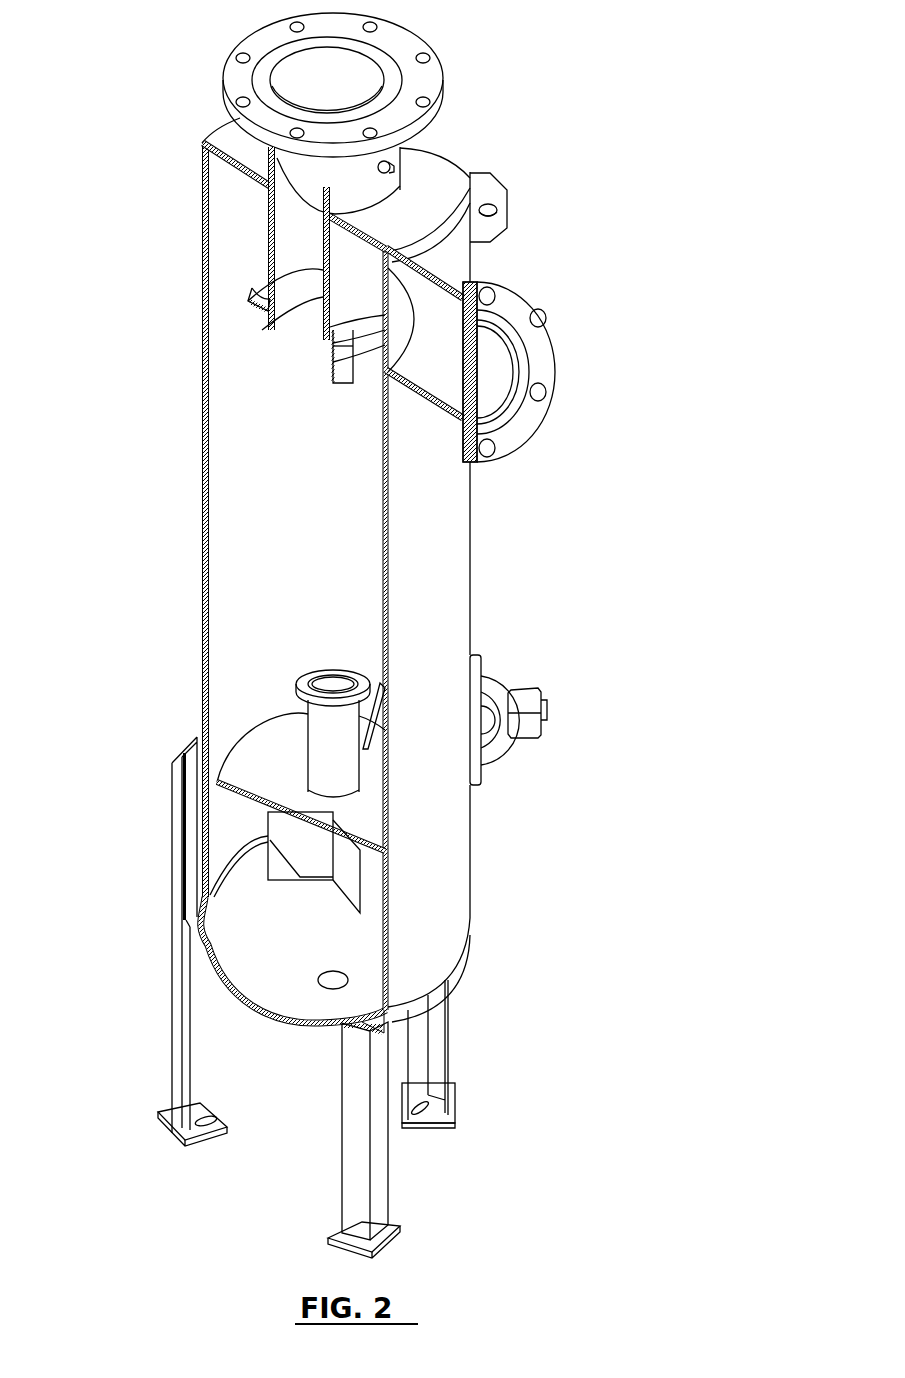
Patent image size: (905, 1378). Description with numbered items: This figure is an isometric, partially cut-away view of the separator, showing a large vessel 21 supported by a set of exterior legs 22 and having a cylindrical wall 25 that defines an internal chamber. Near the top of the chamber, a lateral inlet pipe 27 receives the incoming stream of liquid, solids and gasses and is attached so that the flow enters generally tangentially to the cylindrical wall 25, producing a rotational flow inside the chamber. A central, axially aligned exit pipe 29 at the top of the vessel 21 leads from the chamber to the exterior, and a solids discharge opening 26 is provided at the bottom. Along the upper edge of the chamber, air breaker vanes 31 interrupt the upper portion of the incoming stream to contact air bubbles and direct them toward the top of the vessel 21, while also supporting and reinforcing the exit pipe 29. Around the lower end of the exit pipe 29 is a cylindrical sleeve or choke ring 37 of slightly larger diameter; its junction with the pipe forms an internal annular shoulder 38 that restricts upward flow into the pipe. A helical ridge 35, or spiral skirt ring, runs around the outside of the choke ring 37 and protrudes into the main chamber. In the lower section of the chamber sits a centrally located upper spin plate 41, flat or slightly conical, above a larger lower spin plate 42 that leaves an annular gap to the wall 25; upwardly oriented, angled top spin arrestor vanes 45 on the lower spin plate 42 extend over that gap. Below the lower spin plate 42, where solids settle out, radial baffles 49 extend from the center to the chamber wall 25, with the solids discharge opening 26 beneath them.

The vessel 21 is at (163, 466).
The exterior legs 22 is at (437, 1046).
The cylindrical wall 25 is at (440, 565).
The solids discharge opening 26 is at (328, 978).
The lateral inlet pipe 27 is at (502, 363).
The exit pipe 29 is at (378, 190).
The air breaker vanes 31 is at (359, 248).
The helical ridge 35 is at (253, 290).
The choke ring 37 is at (330, 358).
The internal annular shoulder 38 is at (327, 340).
The upper spin plate 41 is at (330, 680).
The lower spin plate 42 is at (257, 745).
The top spin arrestor vanes 45 is at (377, 725).
The baffles 49 is at (290, 832).